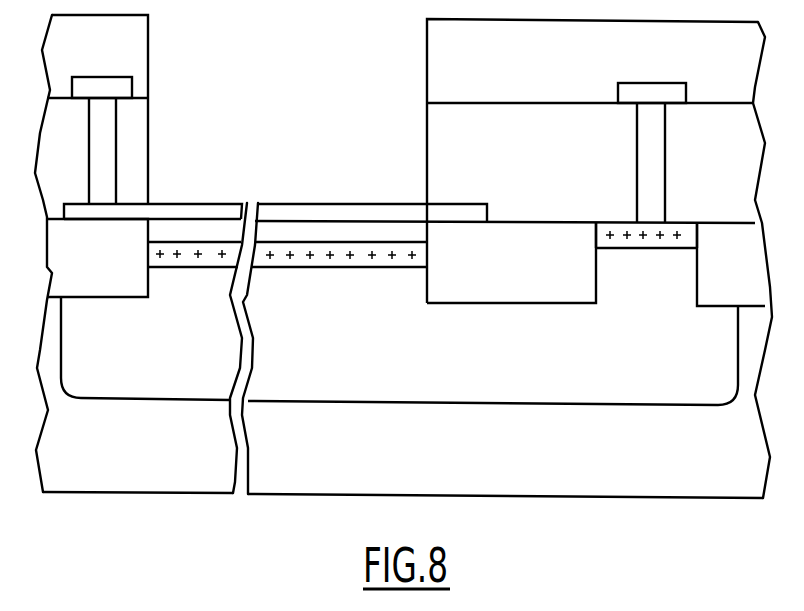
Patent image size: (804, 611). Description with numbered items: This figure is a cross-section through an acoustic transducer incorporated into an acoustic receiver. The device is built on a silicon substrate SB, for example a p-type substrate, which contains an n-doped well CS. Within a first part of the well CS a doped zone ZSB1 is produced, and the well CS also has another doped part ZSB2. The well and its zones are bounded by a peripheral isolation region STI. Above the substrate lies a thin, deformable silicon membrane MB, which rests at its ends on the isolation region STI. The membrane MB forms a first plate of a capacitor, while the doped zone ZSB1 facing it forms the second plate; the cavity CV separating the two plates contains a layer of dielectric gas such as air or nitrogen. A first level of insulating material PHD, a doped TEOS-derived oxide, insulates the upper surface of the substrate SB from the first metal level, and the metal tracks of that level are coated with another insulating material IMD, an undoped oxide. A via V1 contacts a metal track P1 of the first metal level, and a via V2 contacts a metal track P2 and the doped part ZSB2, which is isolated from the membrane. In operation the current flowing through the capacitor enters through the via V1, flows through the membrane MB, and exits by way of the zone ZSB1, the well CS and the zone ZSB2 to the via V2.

The insulating material IMD is at (131, 30).
The first level of insulating material PHD is at (137, 122).
The metal track P1 is at (117, 85).
The via V1 is at (103, 143).
The cavity CV is at (188, 228).
The membrane MB is at (342, 213).
The doped zone ZSB1 is at (320, 260).
The doped part of the well ZSB2 is at (652, 240).
The peripheral isolation region STI is at (110, 272).
The metal track P2 is at (658, 90).
The via V2 is at (657, 147).
The well CS is at (523, 388).
The silicon substrate SB is at (527, 475).